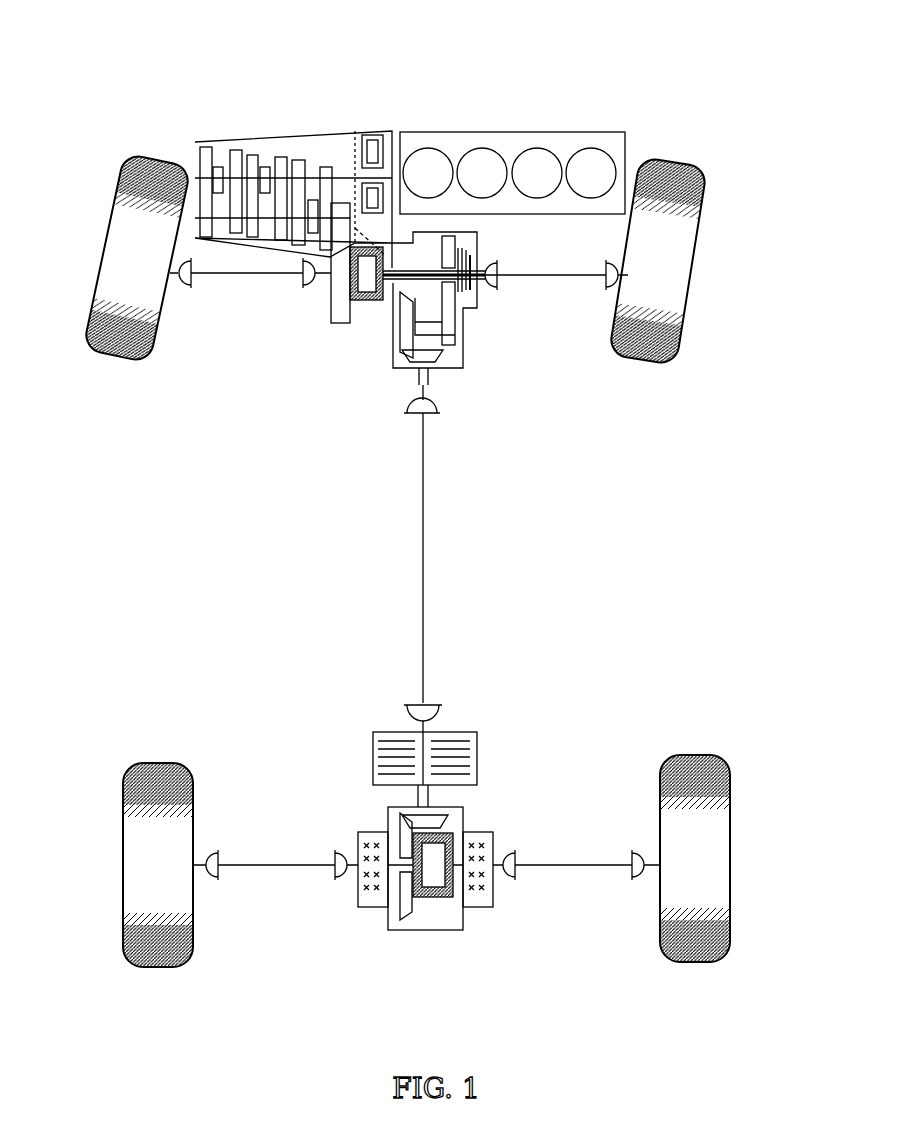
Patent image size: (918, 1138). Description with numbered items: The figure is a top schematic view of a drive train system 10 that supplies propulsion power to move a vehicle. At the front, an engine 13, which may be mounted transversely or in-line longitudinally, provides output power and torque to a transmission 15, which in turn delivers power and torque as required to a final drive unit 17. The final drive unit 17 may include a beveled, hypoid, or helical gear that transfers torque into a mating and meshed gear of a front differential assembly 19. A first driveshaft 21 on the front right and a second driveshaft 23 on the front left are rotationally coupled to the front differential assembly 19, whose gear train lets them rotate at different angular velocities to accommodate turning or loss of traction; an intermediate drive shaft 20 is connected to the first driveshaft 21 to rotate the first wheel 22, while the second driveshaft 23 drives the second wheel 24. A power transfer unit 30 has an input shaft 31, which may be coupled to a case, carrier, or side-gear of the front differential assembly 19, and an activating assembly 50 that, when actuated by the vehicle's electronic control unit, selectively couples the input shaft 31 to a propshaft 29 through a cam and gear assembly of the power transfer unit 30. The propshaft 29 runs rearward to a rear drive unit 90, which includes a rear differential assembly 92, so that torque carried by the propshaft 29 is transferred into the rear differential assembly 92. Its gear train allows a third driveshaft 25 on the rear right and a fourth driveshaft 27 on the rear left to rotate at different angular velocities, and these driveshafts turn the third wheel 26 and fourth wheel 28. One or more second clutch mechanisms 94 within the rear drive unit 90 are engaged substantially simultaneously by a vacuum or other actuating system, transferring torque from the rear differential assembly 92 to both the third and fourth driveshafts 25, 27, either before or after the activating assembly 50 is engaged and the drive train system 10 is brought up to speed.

The drive train system 10 is at (610, 68).
The engine 13 is at (461, 150).
The transmission 15 is at (324, 152).
The final drive unit 17 is at (340, 292).
The front differential assembly 19 is at (366, 305).
The intermediate drive shaft 20 is at (478, 262).
The first driveshaft 21 is at (587, 278).
The first wheel 22 is at (660, 357).
The second driveshaft 23 is at (275, 282).
The second wheel 24 is at (118, 365).
The third driveshaft 25 is at (536, 862).
The third wheel 26 is at (696, 755).
The fourth driveshaft 27 is at (322, 862).
The fourth wheel 28 is at (141, 762).
The propshaft 29 is at (425, 515).
The power transfer unit 30 is at (492, 382).
The input shaft 31 is at (392, 325).
The activating assembly 50 is at (485, 295).
The rear drive unit 90 is at (508, 778).
The rear differential assembly 92 is at (436, 912).
The second clutch mechanism 94 is at (345, 903).